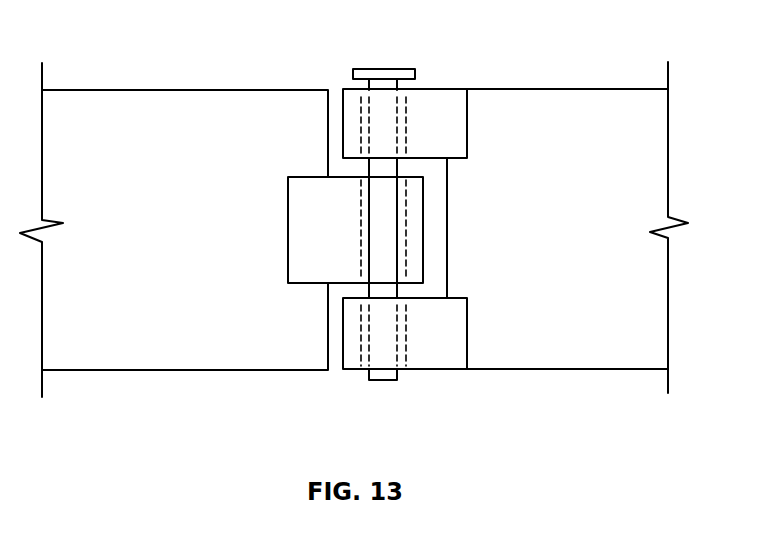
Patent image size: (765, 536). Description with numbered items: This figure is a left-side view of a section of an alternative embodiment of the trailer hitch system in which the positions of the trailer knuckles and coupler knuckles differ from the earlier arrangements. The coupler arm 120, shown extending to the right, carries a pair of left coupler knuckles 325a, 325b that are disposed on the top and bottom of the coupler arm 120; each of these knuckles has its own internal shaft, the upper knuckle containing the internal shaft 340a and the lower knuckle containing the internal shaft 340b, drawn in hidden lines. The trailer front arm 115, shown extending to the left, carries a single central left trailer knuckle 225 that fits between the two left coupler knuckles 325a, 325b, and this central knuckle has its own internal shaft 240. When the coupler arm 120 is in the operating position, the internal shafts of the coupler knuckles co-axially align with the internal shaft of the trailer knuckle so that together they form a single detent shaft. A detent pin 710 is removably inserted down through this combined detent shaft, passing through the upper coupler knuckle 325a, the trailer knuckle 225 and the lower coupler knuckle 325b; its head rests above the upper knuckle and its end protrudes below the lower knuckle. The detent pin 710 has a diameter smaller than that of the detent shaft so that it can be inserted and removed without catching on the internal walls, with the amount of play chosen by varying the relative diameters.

The trailer front arm 115 is at (153, 102).
The coupler arm 120 is at (575, 100).
The central left trailer knuckle 225 is at (303, 228).
The internal shaft 240 is at (360, 228).
The left coupler knuckle 325a is at (453, 102).
The left coupler knuckle 325b is at (452, 328).
The internal shaft 340a is at (408, 110).
The internal shaft 340b is at (403, 350).
The detent pin 710 is at (385, 69).